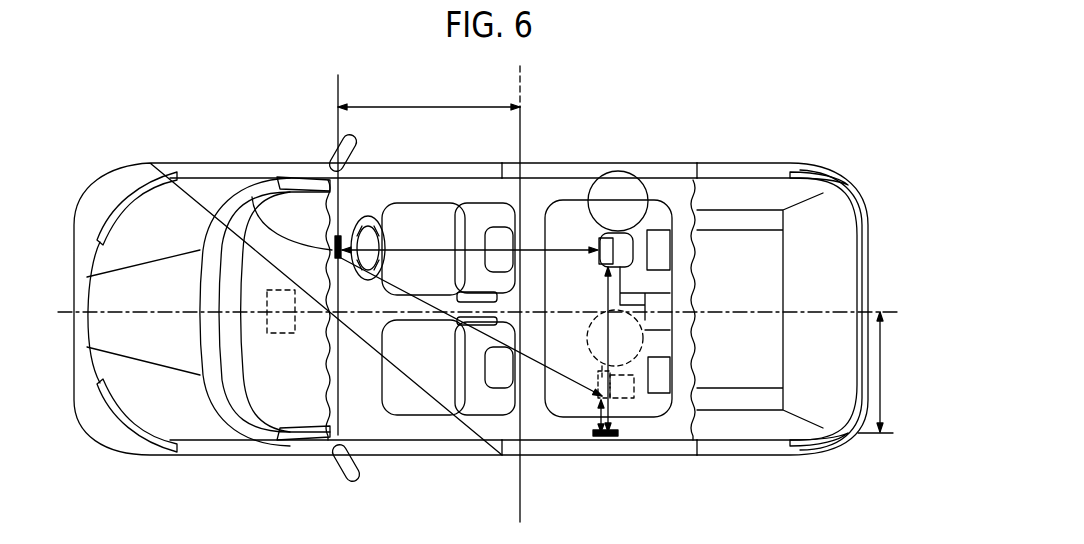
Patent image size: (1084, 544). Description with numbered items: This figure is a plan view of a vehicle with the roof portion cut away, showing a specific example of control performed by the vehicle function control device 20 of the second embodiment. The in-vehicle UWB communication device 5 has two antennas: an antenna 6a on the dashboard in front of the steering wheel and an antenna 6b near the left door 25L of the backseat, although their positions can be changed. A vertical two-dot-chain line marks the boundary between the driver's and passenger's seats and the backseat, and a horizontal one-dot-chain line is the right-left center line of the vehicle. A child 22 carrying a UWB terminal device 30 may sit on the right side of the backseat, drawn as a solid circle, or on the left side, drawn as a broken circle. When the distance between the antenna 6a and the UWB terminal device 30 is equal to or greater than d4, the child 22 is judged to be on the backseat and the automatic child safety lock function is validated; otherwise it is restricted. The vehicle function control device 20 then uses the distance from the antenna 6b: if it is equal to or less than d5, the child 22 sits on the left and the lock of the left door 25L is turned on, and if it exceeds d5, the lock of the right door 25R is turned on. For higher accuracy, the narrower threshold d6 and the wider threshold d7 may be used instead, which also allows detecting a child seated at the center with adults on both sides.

The in-vehicle UWB communication device 5 is at (438, 309).
The antenna 6a is at (333, 247).
The antenna 6b is at (612, 445).
The vehicle function control device 20 is at (268, 333).
The child 22 is at (632, 172).
The right door 25R is at (586, 163).
The left door 25L is at (570, 447).
The UWB terminal device 30 is at (598, 240).
The distance threshold d4 is at (433, 107).
The distance threshold d5 is at (885, 370).
The distance threshold d6 is at (600, 405).
The distance threshold d7 is at (606, 290).